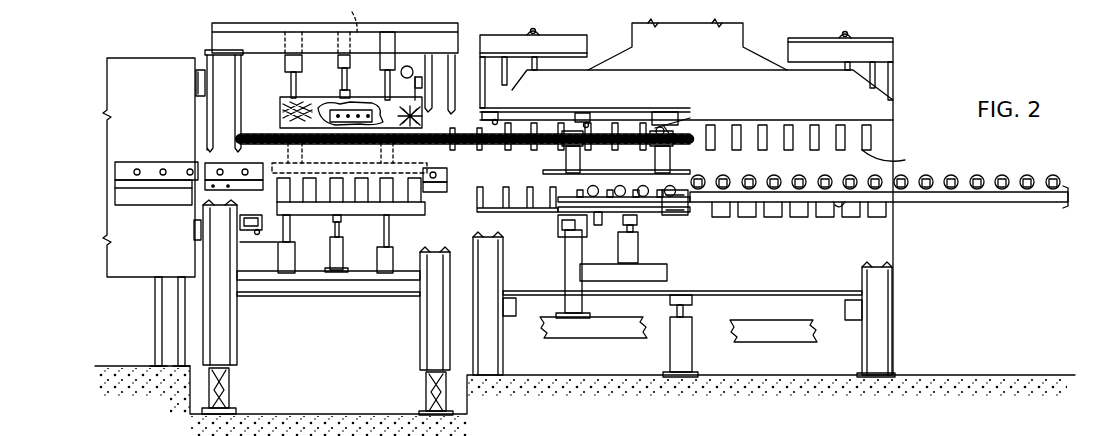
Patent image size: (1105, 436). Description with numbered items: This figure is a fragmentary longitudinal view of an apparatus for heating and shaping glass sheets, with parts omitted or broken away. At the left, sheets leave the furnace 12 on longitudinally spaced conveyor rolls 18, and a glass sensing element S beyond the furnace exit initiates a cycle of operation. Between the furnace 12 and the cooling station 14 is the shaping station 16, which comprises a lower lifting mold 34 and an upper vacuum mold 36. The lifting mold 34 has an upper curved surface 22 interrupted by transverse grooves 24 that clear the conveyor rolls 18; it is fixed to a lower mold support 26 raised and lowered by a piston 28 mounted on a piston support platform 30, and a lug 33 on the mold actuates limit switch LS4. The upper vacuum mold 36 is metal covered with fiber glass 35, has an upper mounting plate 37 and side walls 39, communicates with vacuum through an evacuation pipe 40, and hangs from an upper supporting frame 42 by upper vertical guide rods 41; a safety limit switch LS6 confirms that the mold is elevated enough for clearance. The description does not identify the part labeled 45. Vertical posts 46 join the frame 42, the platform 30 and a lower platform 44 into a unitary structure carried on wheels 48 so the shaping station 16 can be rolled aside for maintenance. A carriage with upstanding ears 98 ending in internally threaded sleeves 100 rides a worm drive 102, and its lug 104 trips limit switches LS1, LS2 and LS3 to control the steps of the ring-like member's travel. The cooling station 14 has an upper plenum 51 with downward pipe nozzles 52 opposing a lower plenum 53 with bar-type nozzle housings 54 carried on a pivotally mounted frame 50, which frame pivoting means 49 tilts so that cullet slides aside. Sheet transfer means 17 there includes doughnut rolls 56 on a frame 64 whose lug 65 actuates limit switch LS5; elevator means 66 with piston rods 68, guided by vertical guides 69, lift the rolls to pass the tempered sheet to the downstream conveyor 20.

The furnace 12 is at (158, 56).
The glass sensing element S is at (203, 68).
The conveyor rolls 18 is at (166, 172).
The shaping station 16 is at (332, 20).
The actuator 45 is at (343, 16).
The upper supporting frame 42 is at (383, 25).
The evacuation pipe 40 is at (425, 85).
The safety limit switch LS6 is at (528, 19).
The cooling station 14 is at (733, 20).
The upper vertical guide rods 41 is at (286, 80).
The upper mounting plate 37 is at (302, 100).
The side walls 39 is at (370, 100).
The upper vacuum mold 36 is at (288, 120).
The fiber glass 35 is at (422, 120).
The limit switch LS1 is at (492, 95).
The limit switch LS2 is at (577, 113).
The limit switch LS3 is at (657, 102).
The lug 104 is at (681, 117).
The upper plenum 51 is at (831, 109).
The pipe nozzles 52 is at (888, 152).
The downstream conveyor 20 is at (937, 206).
The lower bar-type nozzle housings 54 is at (836, 205).
The lower plenum 53 is at (812, 269).
The worm drive 102 is at (447, 142).
The upstanding ears 98 is at (562, 163).
The internally threaded sleeves 100 is at (672, 153).
The doughnut rolls 56 is at (645, 186).
The frame 64 is at (686, 220).
The limit switch LS5 is at (566, 228).
The lug 65 is at (600, 216).
The piston rod 68 is at (637, 222).
The elevator means 66 is at (678, 250).
The vertical guides 69 is at (565, 258).
The sheet transfer means 17 is at (642, 287).
The frame pivoting means 49 is at (693, 306).
The pivotally mounted frame 50 is at (508, 318).
The upper curved surface 22 is at (383, 174).
The lower lifting mold 34 is at (426, 207).
The grooves 24 is at (300, 210).
The lower mold support 26 is at (348, 225).
The piston 28 is at (344, 250).
The limit switch LS4 is at (262, 232).
The lug 33 is at (270, 198).
The lower platform 44 is at (258, 293).
The piston support platform 30 is at (316, 286).
The vertical posts 46 is at (420, 335).
The wheels 48 is at (232, 404).